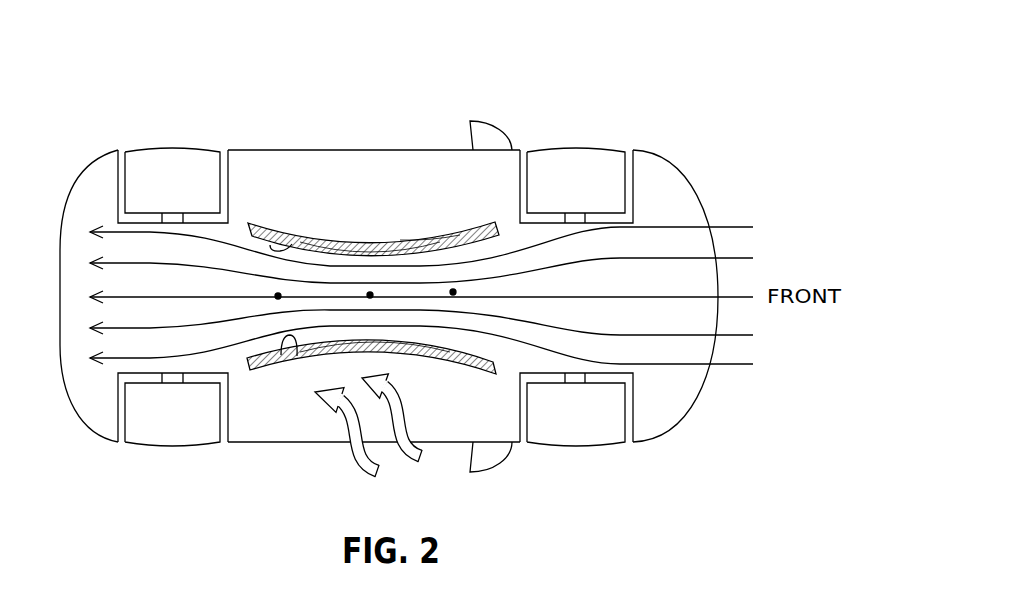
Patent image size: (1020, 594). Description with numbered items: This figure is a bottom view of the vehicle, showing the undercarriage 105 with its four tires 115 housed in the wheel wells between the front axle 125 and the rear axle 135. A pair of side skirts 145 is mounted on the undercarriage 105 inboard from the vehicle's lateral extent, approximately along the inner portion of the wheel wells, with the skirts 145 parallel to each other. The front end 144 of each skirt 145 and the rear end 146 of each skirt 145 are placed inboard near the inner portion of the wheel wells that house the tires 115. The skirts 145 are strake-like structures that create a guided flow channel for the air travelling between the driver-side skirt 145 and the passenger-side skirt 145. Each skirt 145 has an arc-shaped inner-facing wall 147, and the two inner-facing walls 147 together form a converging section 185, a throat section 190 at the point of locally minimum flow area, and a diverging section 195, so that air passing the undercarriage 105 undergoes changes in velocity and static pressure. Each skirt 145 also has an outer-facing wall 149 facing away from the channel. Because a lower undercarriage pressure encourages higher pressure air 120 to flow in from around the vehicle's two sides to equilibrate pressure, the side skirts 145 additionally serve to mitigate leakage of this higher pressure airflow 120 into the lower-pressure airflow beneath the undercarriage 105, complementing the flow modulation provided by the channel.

The undercarriage 105 is at (232, 427).
The tires 115 is at (150, 168).
The higher pressure air 120 is at (389, 435).
The front axle 125 is at (583, 217).
The rear axle 135 is at (163, 217).
The front end of side skirt 144 is at (495, 233).
The side skirts 145 is at (322, 240).
The rear end of side skirt 146 is at (248, 223).
The inner-facing wall 147 is at (270, 245).
The outer-facing wall 149 is at (427, 240).
The converging section 185 is at (453, 292).
The throat section 190 is at (370, 295).
The diverging section 195 is at (278, 296).